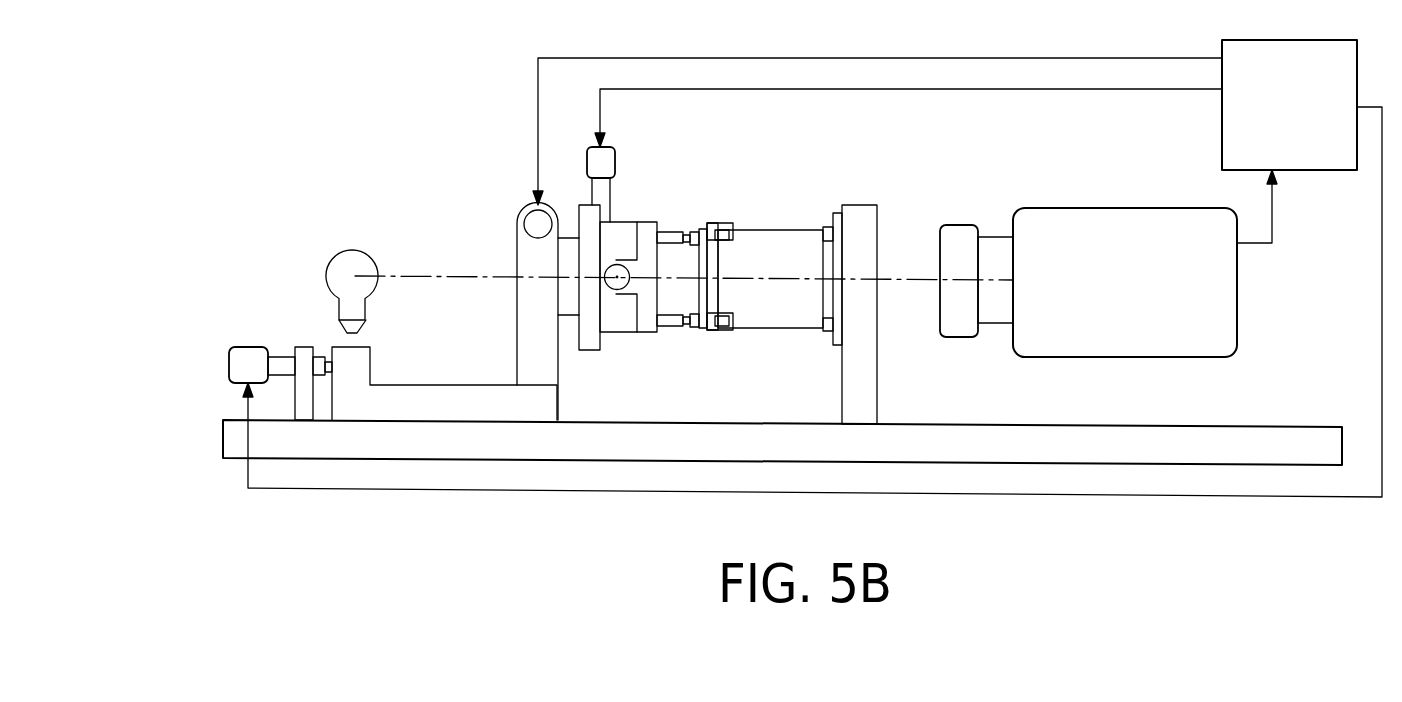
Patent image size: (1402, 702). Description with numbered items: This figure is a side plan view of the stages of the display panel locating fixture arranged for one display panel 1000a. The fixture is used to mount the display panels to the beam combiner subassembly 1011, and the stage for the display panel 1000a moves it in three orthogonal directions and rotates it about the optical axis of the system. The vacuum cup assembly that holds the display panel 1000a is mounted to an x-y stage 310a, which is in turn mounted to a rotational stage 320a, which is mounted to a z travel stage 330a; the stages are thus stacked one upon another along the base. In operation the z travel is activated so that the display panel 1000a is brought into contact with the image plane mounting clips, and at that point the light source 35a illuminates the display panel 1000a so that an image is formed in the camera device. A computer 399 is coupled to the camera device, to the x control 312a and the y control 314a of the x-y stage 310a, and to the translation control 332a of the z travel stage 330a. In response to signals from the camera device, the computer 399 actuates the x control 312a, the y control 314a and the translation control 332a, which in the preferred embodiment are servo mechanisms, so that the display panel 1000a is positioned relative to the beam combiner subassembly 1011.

The computer 399 is at (1318, 119).
The translation control 332a is at (232, 363).
The z travel stage 330a is at (322, 332).
The light source 35a is at (348, 250).
The rotational stage 320a is at (508, 236).
The x-y stage 310a is at (567, 190).
The y control 314a is at (611, 162).
The x control 312a is at (611, 290).
The display panel 1000a is at (696, 230).
The beam combiner subassembly 1011 is at (763, 308).